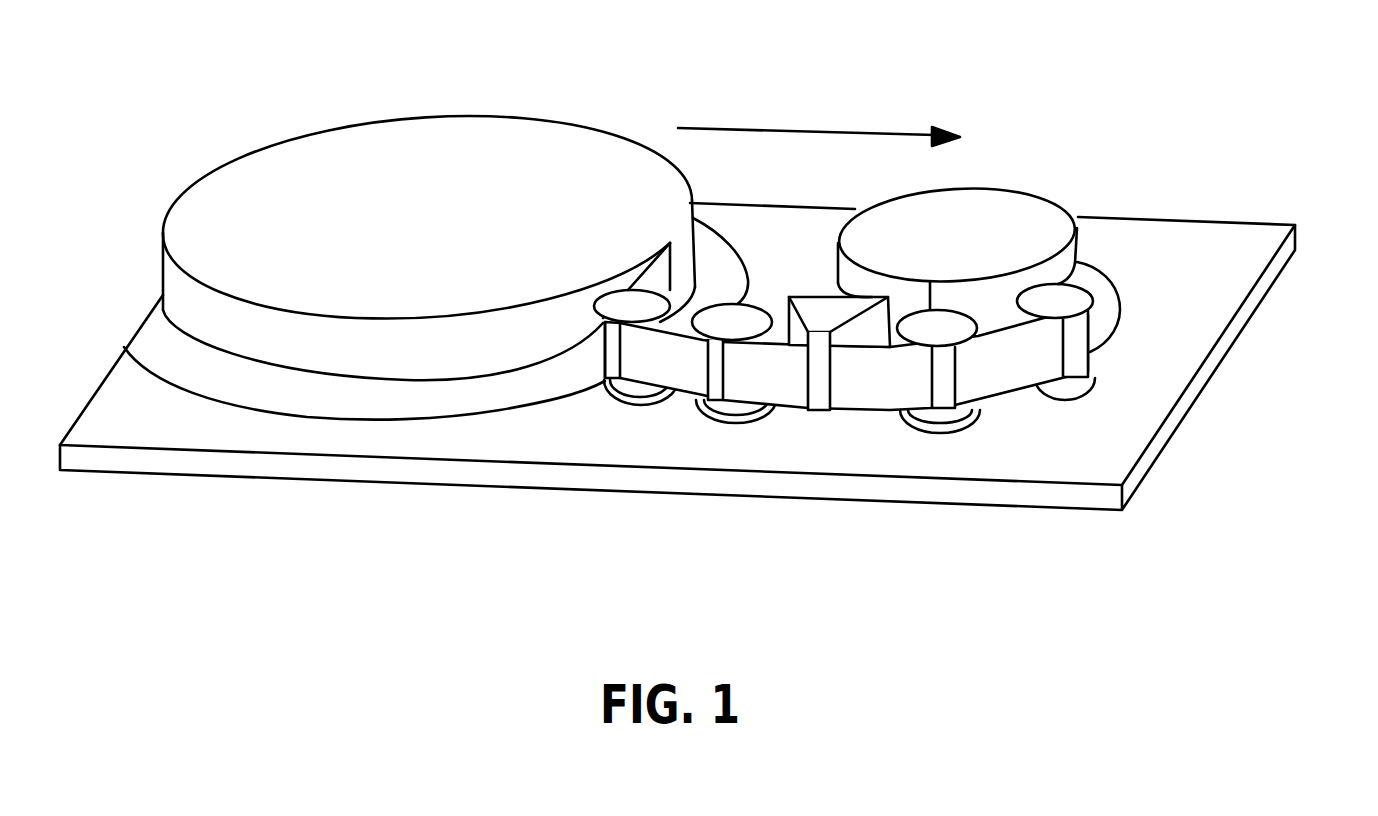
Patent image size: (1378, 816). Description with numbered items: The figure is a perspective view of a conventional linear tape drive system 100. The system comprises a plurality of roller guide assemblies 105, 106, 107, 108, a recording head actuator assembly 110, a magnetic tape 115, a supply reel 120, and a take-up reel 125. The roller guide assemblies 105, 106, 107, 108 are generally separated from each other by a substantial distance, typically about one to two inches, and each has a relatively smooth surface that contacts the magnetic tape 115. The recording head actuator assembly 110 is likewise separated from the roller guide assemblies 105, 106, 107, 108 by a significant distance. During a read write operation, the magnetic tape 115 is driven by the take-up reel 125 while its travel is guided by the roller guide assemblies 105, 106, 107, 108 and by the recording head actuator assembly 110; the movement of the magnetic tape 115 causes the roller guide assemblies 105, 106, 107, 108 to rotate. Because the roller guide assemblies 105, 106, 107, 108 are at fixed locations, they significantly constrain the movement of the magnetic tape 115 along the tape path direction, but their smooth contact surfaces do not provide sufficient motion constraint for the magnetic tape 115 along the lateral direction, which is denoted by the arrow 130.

The conventional linear tape drive system 100 is at (710, 31).
The roller guide assembly 105 is at (1070, 310).
The roller guide assembly 106 is at (947, 423).
The roller guide assembly 107 is at (732, 417).
The roller guide assembly 108 is at (632, 400).
The recording head actuator assembly 110 is at (822, 307).
The magnetic tape 115 is at (985, 373).
The supply reel 120 is at (342, 238).
The take-up reel 125 is at (965, 227).
The arrow 130 is at (819, 115).